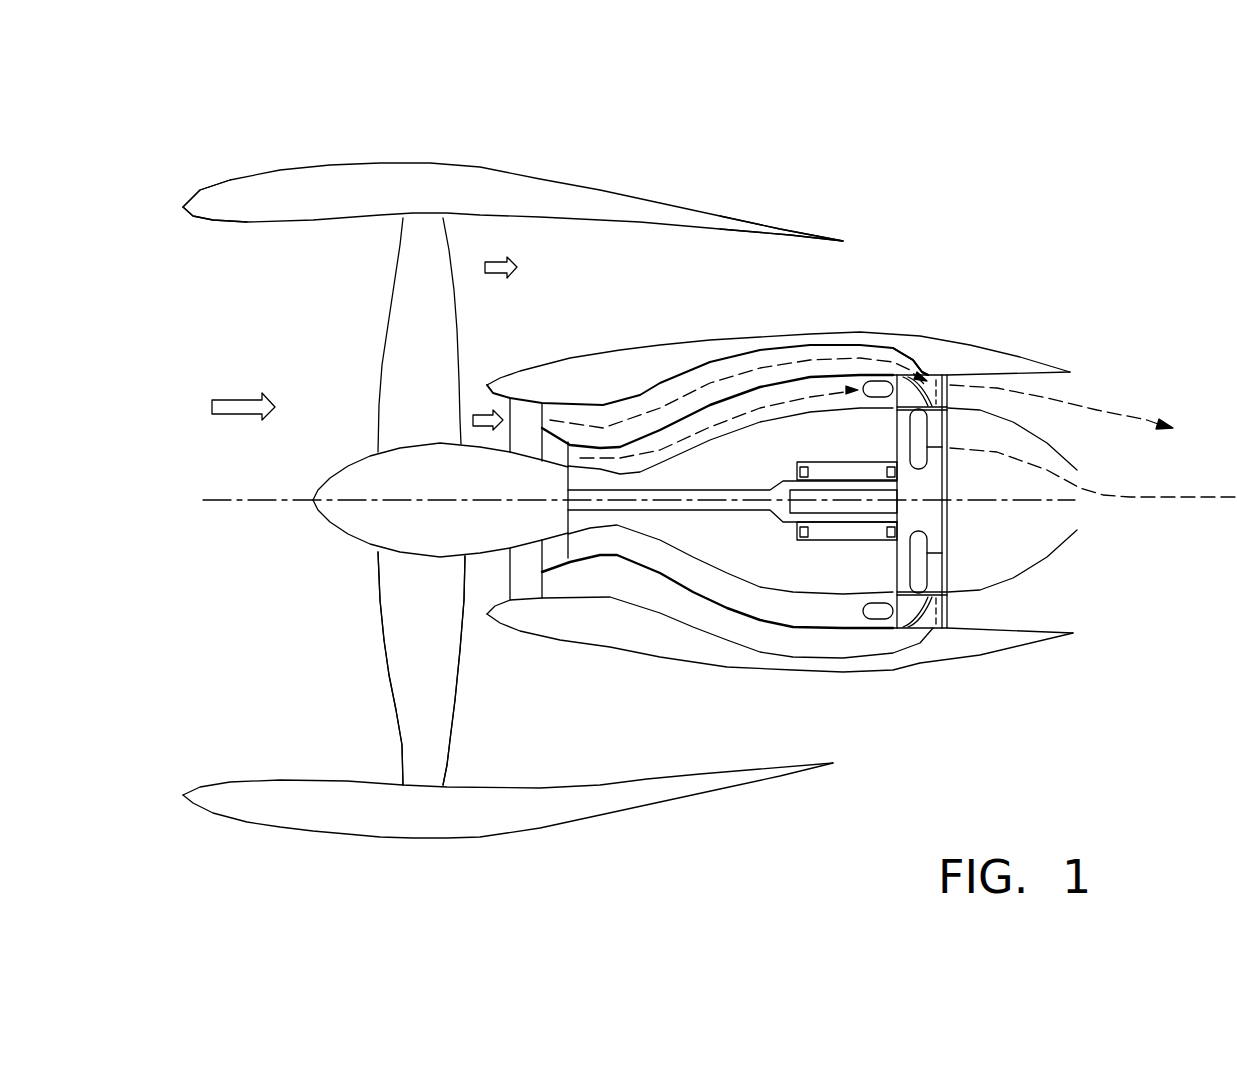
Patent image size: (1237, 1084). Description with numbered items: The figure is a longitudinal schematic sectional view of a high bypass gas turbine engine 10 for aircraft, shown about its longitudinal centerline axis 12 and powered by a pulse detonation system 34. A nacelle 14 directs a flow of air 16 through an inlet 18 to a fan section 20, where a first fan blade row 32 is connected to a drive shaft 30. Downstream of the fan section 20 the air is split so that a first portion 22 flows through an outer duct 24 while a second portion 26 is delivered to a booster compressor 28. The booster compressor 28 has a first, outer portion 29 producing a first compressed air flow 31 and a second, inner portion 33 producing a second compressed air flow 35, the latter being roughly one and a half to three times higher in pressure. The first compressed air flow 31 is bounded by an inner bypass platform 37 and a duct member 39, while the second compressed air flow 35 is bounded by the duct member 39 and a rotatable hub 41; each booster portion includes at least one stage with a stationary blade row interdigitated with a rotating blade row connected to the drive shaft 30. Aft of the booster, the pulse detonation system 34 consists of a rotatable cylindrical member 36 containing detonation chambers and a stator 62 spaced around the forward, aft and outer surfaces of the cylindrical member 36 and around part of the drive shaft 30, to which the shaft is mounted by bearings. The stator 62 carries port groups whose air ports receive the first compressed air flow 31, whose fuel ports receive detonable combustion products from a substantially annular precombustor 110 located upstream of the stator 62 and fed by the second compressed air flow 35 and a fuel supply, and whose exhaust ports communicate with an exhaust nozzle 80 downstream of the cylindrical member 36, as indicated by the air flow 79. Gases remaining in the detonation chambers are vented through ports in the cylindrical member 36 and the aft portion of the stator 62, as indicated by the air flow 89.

The gas turbine engine 10 is at (1102, 146).
The longitudinal centerline axis 12 is at (283, 500).
The nacelle 14 is at (298, 185).
The air flow 16 is at (243, 398).
The inlet 18 is at (252, 222).
The fan section 20 is at (375, 690).
The first portion of air flow 22 is at (493, 258).
The outer duct 24 is at (633, 223).
The second portion of air flow 26 is at (495, 408).
The booster compressor 28 is at (497, 585).
The first (outer) portion of booster compressor 29 is at (525, 413).
The drive shaft 30 is at (716, 513).
The first compressed air flow 31 is at (687, 400).
The first fan blade row 32 is at (445, 723).
The second (inner) portion of booster compressor 33 is at (553, 458).
The pulse detonation system 34 is at (937, 349).
The second compressed air flow 35 is at (660, 453).
The rotatable cylindrical member 36 is at (907, 570).
The inner bypass platform 37 is at (710, 343).
The duct member 39 is at (740, 405).
The rotatable hub 41 is at (723, 445).
The stator 62 is at (955, 522).
The exhaust air flow 79 is at (1058, 400).
The exhaust nozzle 80 is at (1071, 374).
The vented gas flow 89 is at (1187, 500).
The precombustor 110 is at (862, 610).